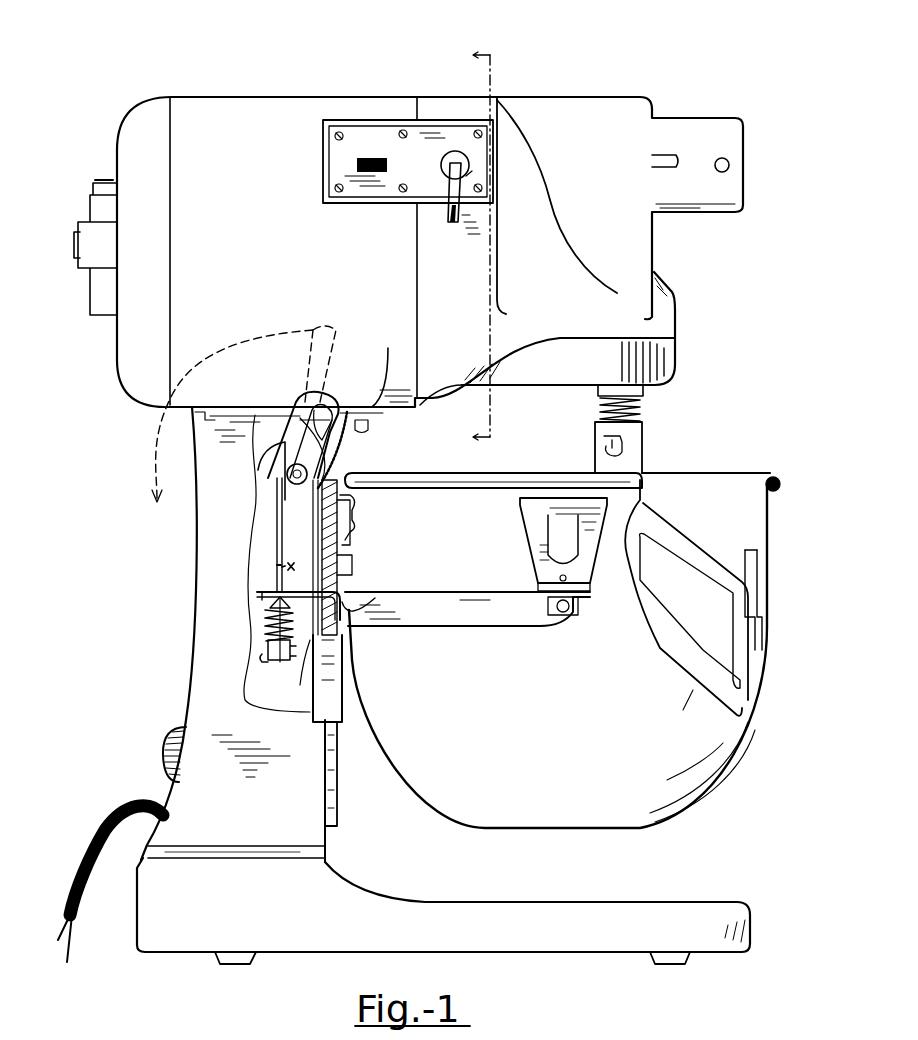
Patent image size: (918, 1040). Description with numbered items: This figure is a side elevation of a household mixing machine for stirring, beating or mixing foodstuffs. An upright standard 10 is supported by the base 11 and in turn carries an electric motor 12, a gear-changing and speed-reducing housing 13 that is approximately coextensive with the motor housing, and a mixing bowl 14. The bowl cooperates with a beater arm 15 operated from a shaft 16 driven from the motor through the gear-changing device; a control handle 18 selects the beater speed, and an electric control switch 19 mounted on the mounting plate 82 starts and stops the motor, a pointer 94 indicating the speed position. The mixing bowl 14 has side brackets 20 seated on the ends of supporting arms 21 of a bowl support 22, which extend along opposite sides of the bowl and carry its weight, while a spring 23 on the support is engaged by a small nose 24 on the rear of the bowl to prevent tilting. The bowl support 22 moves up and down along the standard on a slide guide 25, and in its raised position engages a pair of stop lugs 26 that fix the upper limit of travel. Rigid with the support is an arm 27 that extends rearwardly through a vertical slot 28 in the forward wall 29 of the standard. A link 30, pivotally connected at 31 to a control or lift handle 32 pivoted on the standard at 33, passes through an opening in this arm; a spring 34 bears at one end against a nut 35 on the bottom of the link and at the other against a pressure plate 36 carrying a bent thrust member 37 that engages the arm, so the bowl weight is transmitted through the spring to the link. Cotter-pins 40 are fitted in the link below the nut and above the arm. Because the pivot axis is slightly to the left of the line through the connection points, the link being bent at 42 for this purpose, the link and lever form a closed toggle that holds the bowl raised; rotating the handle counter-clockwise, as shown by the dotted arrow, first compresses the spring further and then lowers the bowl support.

The upright standard 10 is at (190, 631).
The base 11 is at (588, 982).
The electric motor 12 is at (245, 125).
The gear-changing and speed-reducing housing 13 is at (600, 118).
The mixing bowl 14 is at (738, 485).
The beater arm 15 is at (647, 440).
The shaft 16 is at (598, 422).
The control handle 18 is at (458, 218).
The electric control switch 19 is at (384, 176).
The side brackets 20 is at (534, 552).
The supporting arms 21 is at (438, 625).
The bowl support 22 is at (352, 512).
The spring 23 is at (350, 537).
The nose 24 is at (352, 568).
The slide guide 25 is at (338, 793).
The stop lugs 26 is at (338, 470).
The arm 27 is at (300, 592).
The vertical slot 28 is at (293, 668).
The forward wall 29 is at (285, 503).
The link 30 is at (300, 540).
The pivotal connection 31 is at (298, 408).
The control or lift handle 32 is at (326, 326).
The pivot axis 33 is at (318, 424).
The spring 34 is at (265, 640).
The nut 35 is at (270, 660).
The pressure plate 36 is at (270, 604).
The bent thrust member 37 is at (262, 596).
The cotter-pins 40 is at (280, 566).
The bend point 42 is at (286, 470).
The mounting plate 82 is at (388, 118).
The pointer 94 is at (464, 165).